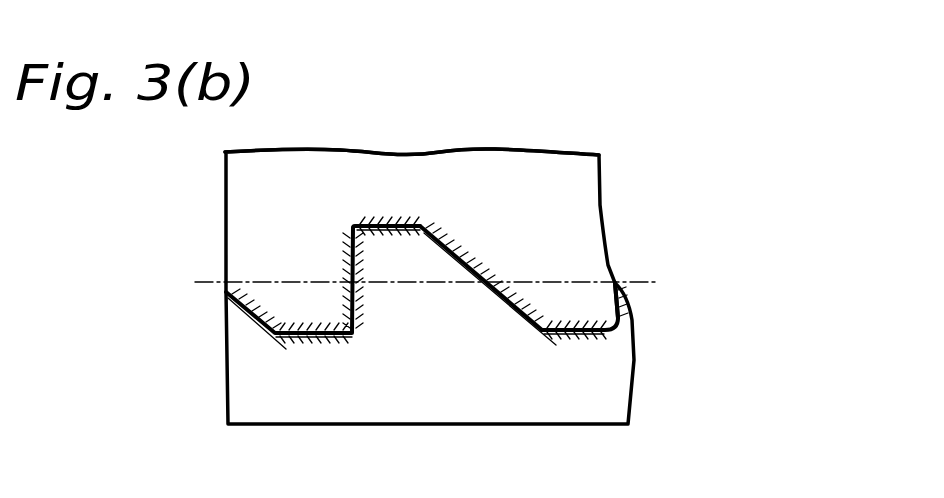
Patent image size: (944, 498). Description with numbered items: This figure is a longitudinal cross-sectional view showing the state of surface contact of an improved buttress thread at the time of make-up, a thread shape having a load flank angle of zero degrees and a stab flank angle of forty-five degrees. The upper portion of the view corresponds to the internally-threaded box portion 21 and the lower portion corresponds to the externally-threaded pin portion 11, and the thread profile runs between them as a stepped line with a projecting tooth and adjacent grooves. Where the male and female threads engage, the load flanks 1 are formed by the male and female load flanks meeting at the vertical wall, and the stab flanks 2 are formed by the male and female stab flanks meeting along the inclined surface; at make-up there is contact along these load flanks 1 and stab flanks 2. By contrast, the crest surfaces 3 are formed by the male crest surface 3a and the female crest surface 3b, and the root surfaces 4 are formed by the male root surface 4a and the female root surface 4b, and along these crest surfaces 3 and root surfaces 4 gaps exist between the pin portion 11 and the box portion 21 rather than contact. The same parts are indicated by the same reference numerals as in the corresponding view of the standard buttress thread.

The pin portion 11 is at (341, 392).
The box portion 21 is at (376, 175).
The load flank 1 is at (348, 274).
The crest surface 3 is at (405, 215).
The male crest surface 3a is at (393, 232).
The female crest surface 3b is at (366, 215).
The stab flank 2 is at (483, 270).
The root surface 4 is at (604, 338).
The male root surface 4a is at (548, 345).
The female root surface 4b is at (578, 325).